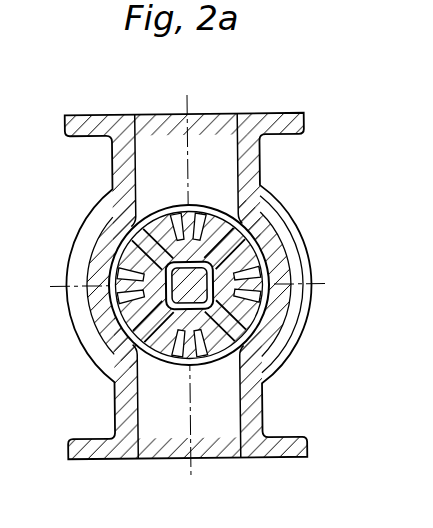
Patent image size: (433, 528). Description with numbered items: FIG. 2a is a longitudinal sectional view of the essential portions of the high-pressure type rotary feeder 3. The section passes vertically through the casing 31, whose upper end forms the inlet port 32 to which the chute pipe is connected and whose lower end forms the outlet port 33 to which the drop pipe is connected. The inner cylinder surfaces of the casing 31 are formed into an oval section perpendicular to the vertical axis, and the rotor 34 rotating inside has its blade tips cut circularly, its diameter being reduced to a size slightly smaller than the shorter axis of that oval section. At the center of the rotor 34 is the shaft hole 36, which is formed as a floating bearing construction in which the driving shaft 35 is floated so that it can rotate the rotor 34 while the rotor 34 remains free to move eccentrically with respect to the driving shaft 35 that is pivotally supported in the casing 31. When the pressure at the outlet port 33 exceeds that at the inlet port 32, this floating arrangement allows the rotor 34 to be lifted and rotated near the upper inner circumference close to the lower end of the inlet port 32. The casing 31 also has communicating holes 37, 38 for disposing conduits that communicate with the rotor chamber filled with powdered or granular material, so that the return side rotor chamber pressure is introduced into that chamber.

The rotary feeder 3 is at (318, 133).
The casing 31 is at (277, 203).
The inlet port 32 is at (227, 120).
The outlet port 33 is at (229, 450).
The rotor 34 is at (217, 342).
The driving shaft 35 is at (209, 296).
The shaft hole 36 is at (213, 273).
The communicating hole 37 is at (273, 236).
The communicating hole 38 is at (120, 240).